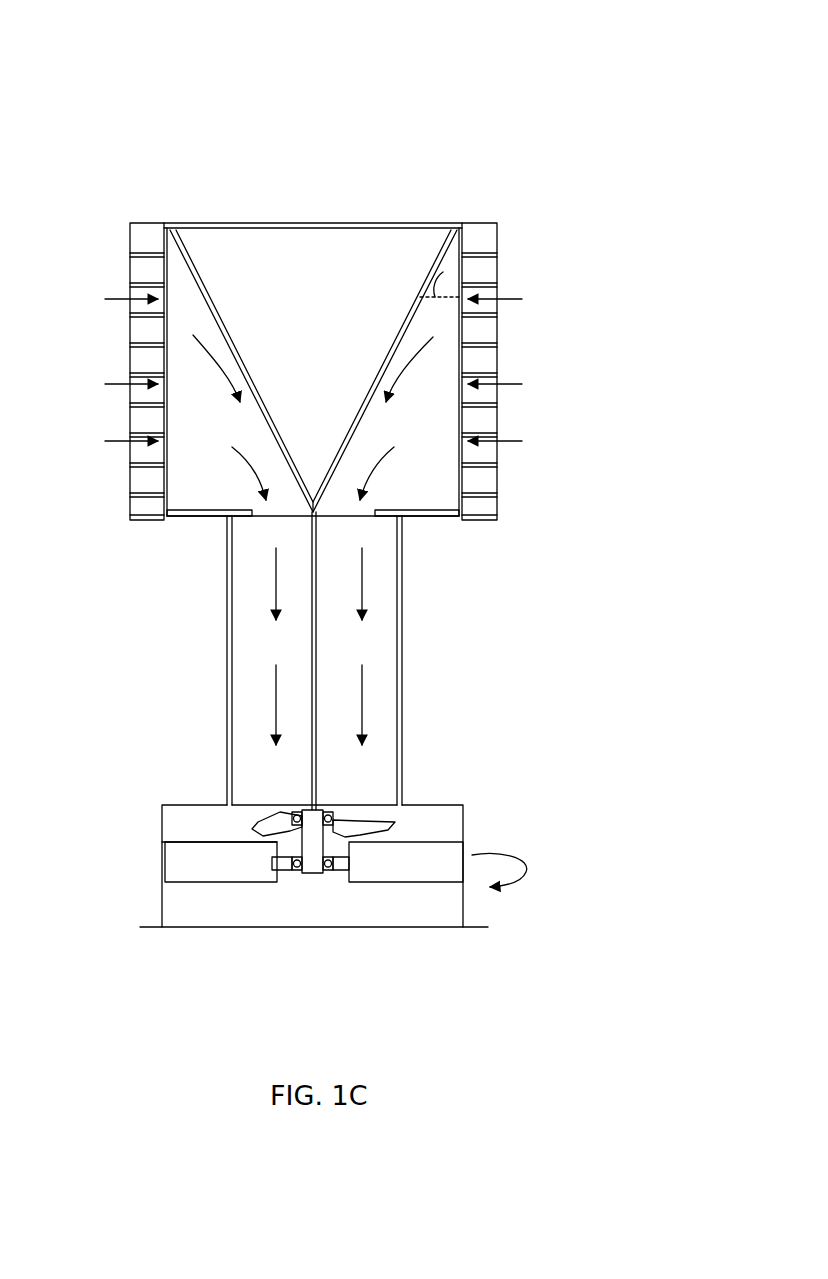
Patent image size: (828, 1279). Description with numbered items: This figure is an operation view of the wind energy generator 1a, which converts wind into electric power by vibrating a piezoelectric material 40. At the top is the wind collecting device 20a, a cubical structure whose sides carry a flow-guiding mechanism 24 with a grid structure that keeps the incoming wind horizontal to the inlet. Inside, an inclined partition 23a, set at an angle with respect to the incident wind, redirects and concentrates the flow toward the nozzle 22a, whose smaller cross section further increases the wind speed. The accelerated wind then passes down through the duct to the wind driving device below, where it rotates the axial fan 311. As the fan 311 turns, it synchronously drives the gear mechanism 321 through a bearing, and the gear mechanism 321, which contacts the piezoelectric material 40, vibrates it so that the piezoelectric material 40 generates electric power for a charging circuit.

The wind energy generator 1a is at (535, 118).
The wind collecting device 20a is at (255, 223).
The nozzle 22a is at (350, 516).
The partition 23a is at (390, 350).
The flow-guiding mechanism 24 is at (150, 240).
The axial fan 311 is at (262, 824).
The gear mechanism 321 is at (285, 866).
The piezoelectric material 40 is at (403, 858).